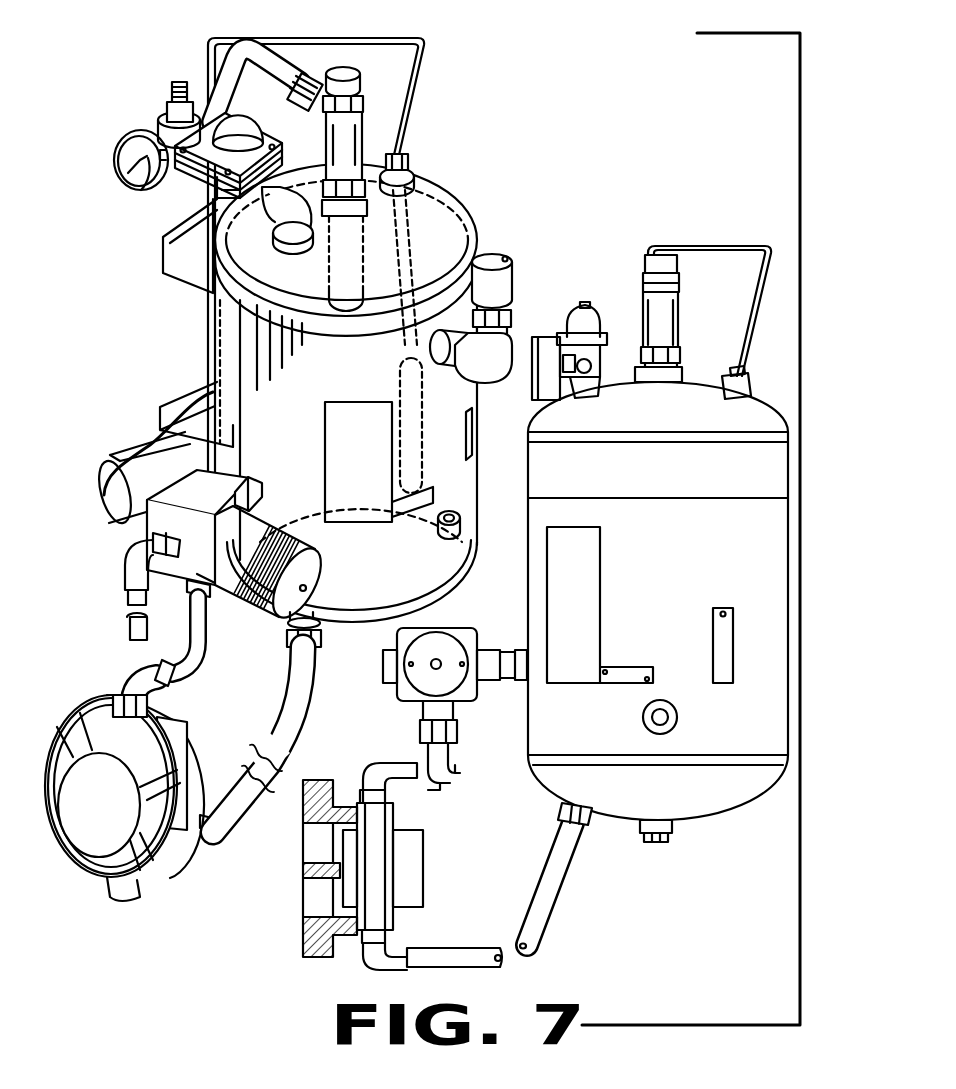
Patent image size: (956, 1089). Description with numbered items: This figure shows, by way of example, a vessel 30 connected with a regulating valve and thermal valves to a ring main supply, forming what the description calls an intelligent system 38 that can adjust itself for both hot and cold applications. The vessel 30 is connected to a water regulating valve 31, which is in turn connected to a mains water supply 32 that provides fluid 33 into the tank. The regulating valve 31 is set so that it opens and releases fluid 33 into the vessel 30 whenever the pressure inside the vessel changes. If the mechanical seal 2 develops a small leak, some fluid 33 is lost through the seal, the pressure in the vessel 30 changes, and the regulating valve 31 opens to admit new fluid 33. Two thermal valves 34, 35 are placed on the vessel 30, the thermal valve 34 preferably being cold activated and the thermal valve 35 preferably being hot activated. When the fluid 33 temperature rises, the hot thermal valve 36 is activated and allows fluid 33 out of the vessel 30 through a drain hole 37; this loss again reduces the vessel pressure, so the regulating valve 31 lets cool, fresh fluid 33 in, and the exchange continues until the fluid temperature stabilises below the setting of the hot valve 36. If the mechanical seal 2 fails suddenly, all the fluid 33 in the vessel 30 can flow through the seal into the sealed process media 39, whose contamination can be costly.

The mechanical seal 2 is at (423, 867).
The vessel 30 is at (537, 501).
The water regulating valve 31 is at (174, 87).
The mains water supply 32 is at (142, 128).
The fluid 33 is at (533, 622).
The thermal valve 34 is at (470, 703).
The thermal valve 35 is at (303, 872).
The hot thermal valve 36 is at (362, 68).
The drain hole 37 is at (165, 402).
The intelligent system 38 is at (447, 192).
The process media 39 is at (316, 898).